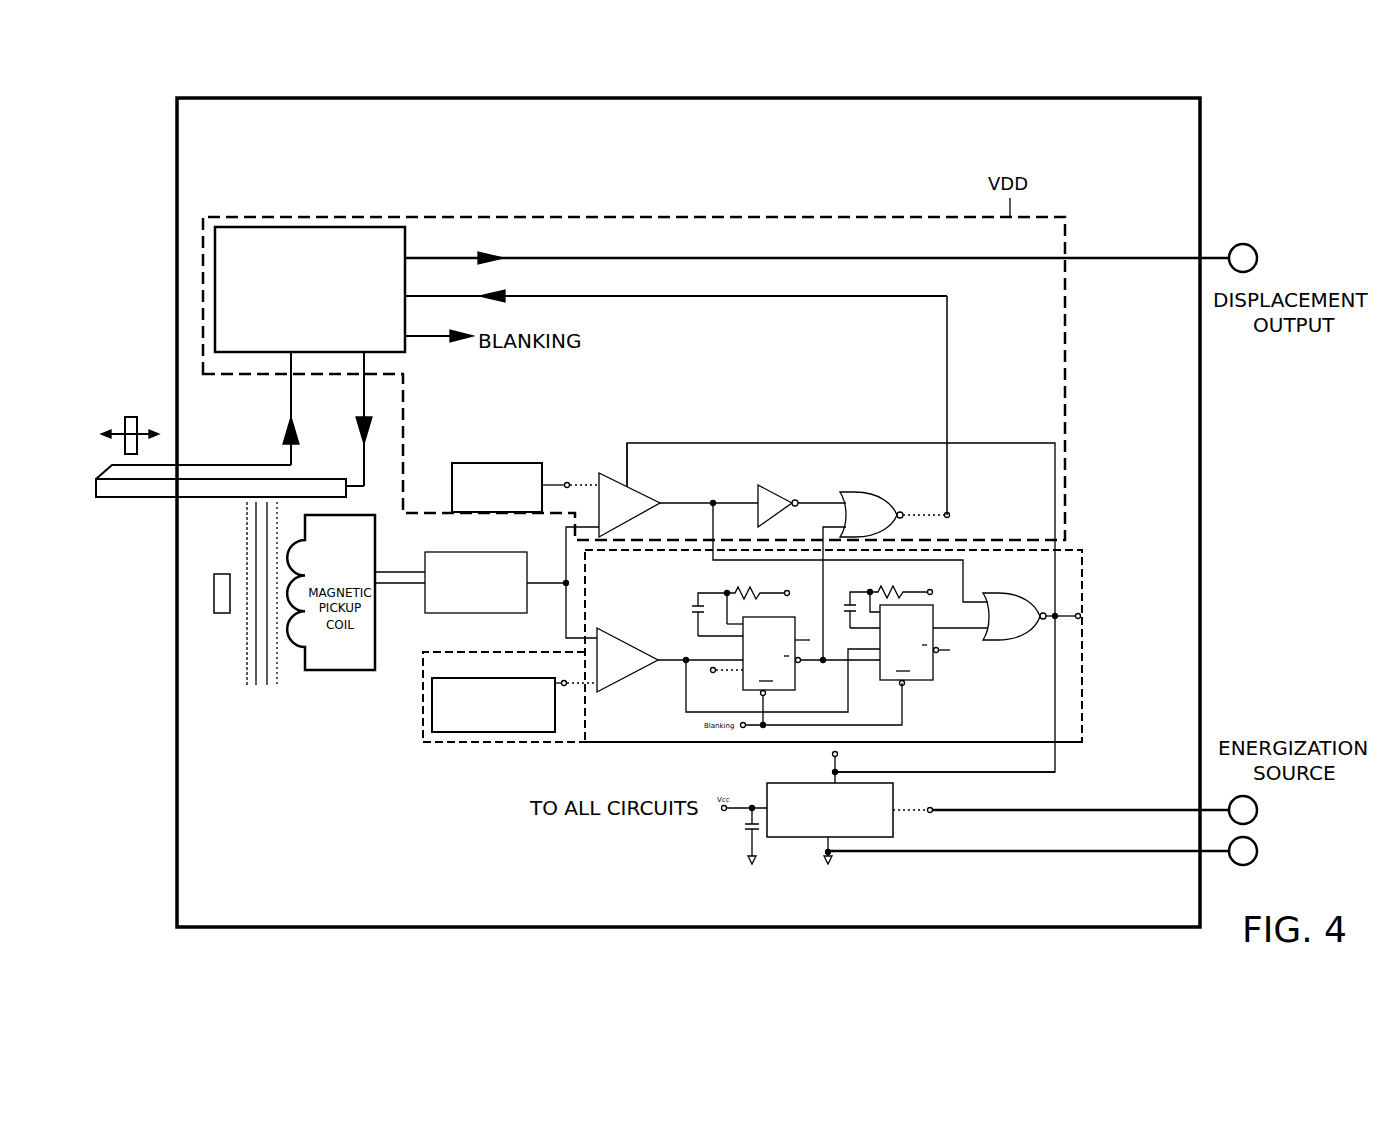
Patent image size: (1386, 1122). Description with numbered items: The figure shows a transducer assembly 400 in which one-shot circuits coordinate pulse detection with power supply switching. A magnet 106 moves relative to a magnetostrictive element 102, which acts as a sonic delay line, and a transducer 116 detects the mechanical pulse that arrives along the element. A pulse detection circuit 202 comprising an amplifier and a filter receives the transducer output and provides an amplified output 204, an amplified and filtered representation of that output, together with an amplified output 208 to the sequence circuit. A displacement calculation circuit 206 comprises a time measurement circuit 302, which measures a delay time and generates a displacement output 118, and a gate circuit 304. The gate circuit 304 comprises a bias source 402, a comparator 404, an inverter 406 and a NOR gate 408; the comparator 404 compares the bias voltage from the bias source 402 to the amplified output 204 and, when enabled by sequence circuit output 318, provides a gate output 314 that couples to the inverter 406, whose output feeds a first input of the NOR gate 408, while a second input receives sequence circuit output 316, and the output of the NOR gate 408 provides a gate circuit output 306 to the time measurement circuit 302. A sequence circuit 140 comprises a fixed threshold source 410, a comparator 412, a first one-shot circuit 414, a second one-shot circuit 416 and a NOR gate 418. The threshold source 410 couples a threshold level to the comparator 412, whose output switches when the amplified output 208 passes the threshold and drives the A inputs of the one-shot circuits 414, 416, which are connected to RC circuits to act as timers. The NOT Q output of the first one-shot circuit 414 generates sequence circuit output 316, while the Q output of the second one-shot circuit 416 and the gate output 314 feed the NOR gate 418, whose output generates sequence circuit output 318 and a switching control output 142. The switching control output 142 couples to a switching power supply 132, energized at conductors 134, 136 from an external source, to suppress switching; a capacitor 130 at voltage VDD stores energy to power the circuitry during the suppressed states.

The transducer assembly 400 is at (318, 78).
The magnetostrictive element 102 is at (161, 501).
The magnet 106 is at (135, 415).
The transducer 116 is at (265, 723).
The displacement output 118 is at (1087, 253).
The capacitor 130 is at (750, 818).
The switching power supply 132 is at (787, 837).
The conductor 134 is at (1068, 810).
The conductor 136 is at (1062, 853).
The sequence circuit 140 is at (695, 742).
The switching control output 142 is at (1055, 767).
The pulse detection circuit 202 is at (478, 552).
The amplified output 204 is at (563, 527).
The displacement calculation circuit 206 is at (752, 217).
The amplified output 208 is at (563, 622).
The time measurement circuit 302 is at (265, 225).
The gate circuit 304 is at (608, 413).
The gate circuit output 306 is at (947, 390).
The gate output 314 is at (713, 535).
The sequence circuit output 316 is at (781, 525).
The sequence circuit output 318 is at (1082, 550).
The bias source 402 is at (517, 463).
The comparator 404 is at (633, 490).
The inverter 406 is at (777, 487).
The NOR gate 408 is at (873, 492).
The fixed threshold source 410 is at (510, 732).
The comparator 412 is at (635, 673).
The first one-shot circuit 414 is at (660, 618).
The second one-shot circuit 416 is at (966, 693).
The NOR gate 418 is at (982, 595).